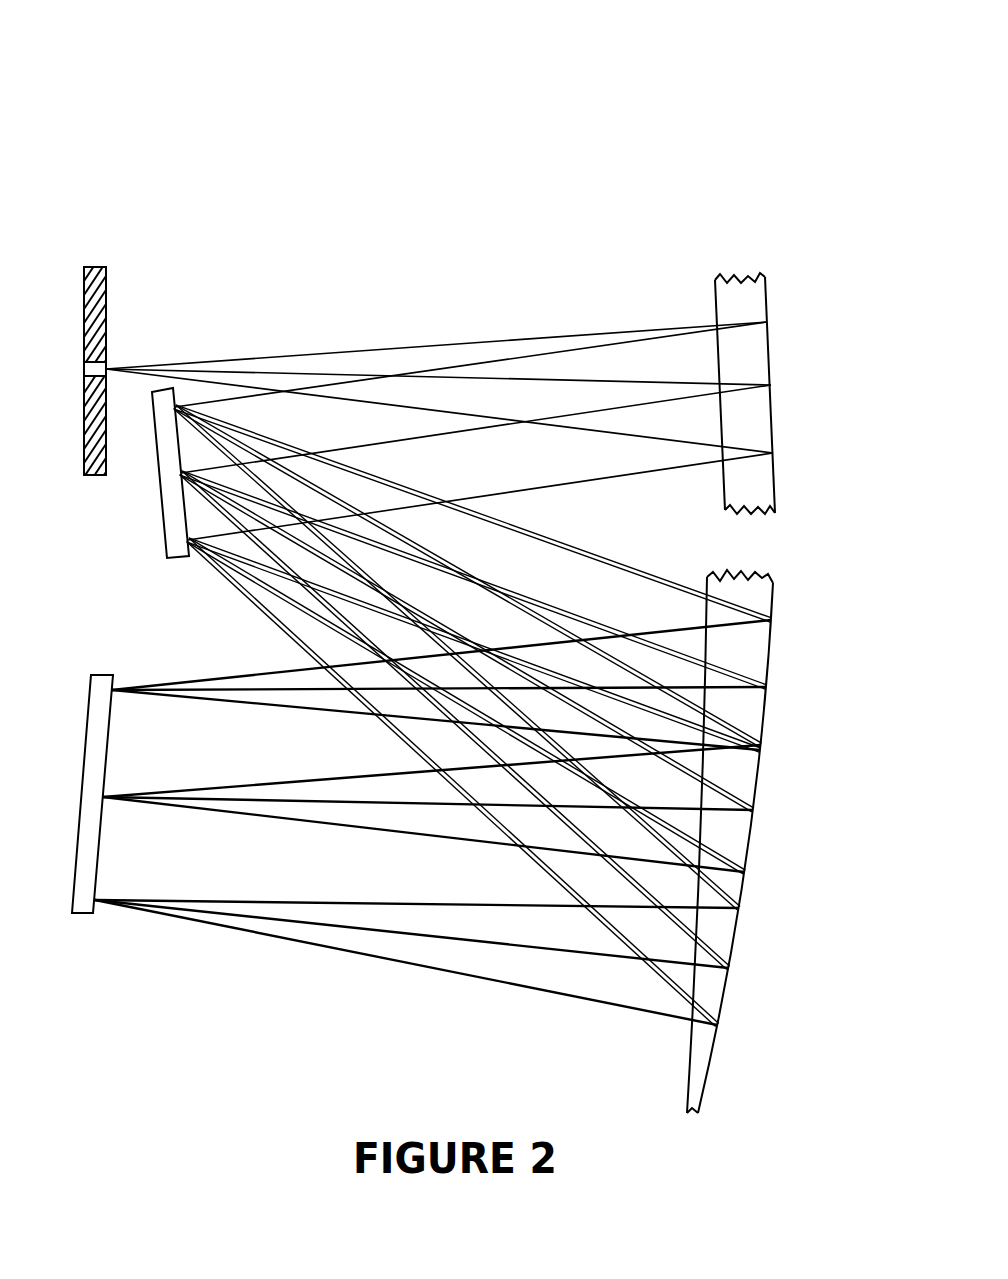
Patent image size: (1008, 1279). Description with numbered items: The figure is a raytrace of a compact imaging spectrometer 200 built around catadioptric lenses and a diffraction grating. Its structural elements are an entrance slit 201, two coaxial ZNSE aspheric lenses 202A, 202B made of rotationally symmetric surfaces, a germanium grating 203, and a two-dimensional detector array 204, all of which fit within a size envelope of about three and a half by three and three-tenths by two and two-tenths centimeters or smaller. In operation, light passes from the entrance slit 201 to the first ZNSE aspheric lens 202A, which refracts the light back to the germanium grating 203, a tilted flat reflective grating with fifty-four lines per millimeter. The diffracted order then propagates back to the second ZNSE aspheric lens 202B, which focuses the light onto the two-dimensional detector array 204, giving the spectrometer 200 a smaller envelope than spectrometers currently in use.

The compact imaging spectrometer 200 is at (374, 158).
The entrance slit 201 is at (93, 266).
The ZNSE aspheric lens 202A is at (771, 352).
The ZNSE aspheric lens 202B is at (749, 848).
The germanium grating 203 is at (165, 540).
The 2D detector array 204 is at (80, 914).